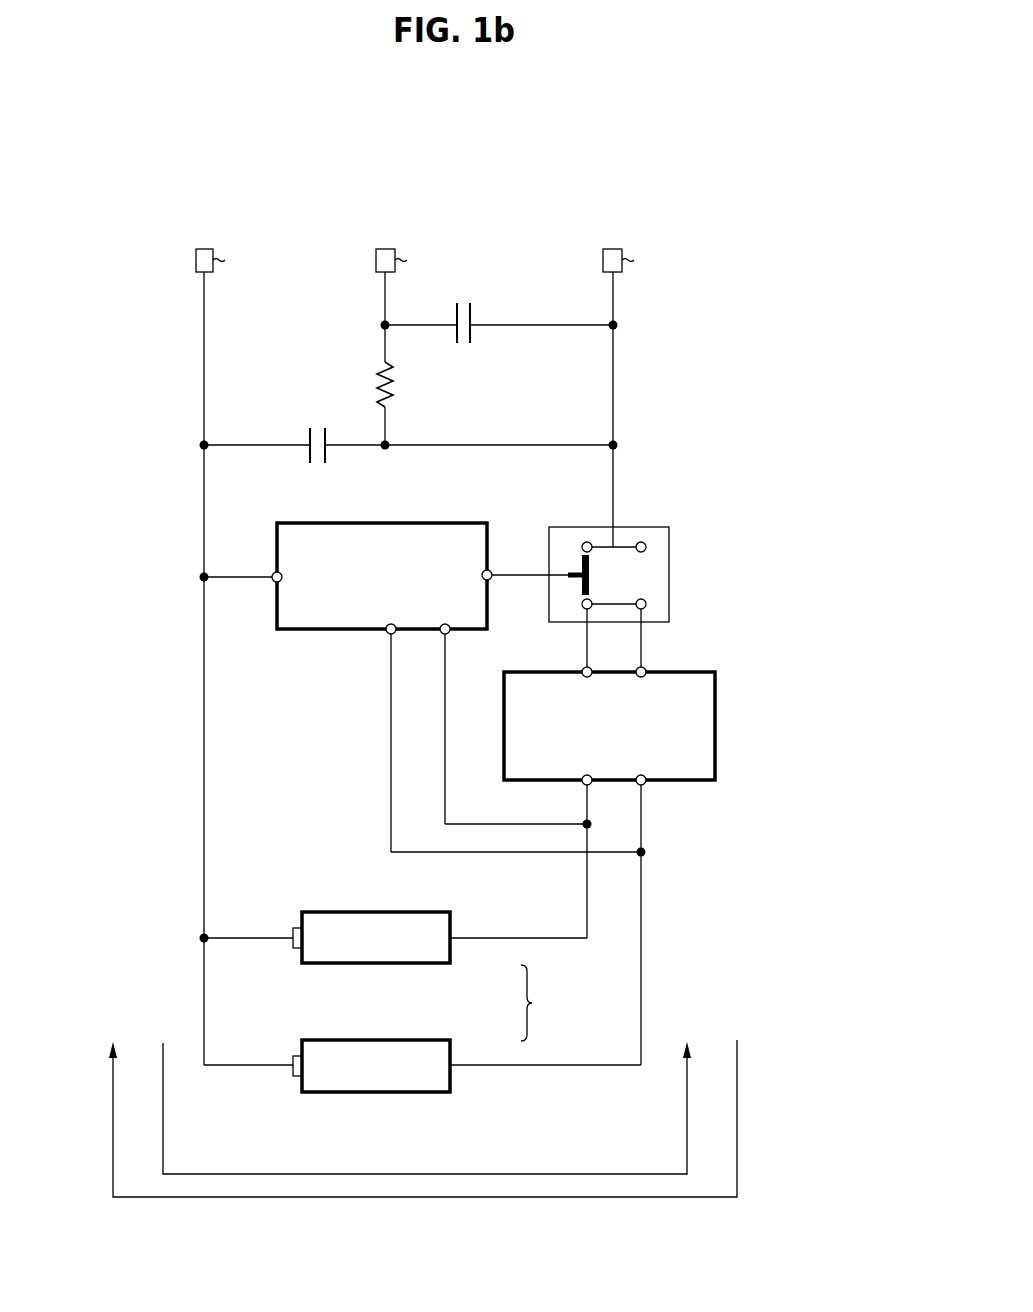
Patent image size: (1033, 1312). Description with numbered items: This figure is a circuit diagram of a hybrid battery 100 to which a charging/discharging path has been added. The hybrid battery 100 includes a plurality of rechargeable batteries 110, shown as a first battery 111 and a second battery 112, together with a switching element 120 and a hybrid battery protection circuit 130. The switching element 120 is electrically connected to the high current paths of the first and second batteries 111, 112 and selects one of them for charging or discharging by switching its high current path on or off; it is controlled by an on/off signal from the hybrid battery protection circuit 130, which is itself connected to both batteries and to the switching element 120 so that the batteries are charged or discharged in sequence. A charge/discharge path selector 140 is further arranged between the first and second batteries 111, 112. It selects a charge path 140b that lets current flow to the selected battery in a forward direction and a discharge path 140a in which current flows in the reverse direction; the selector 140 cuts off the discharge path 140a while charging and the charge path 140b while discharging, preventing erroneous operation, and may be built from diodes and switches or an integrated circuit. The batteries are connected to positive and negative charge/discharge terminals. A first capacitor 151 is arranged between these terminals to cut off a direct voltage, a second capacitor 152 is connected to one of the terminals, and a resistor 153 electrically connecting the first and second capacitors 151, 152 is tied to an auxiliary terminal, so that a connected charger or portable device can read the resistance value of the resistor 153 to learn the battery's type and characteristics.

The hybrid battery 100 is at (763, 212).
The rechargeable batteries 110 is at (548, 1003).
The first battery 111 is at (452, 1052).
The second battery 112 is at (452, 955).
The switching element 120 is at (669, 573).
The hybrid battery protection circuit 130 is at (316, 632).
The charge/discharge path selector 140 is at (715, 722).
The discharge path 140a is at (737, 1117).
The charge path 140b is at (600, 1173).
The first capacitor 151 is at (310, 428).
The second capacitor 152 is at (471, 338).
The resistor 153 is at (393, 390).